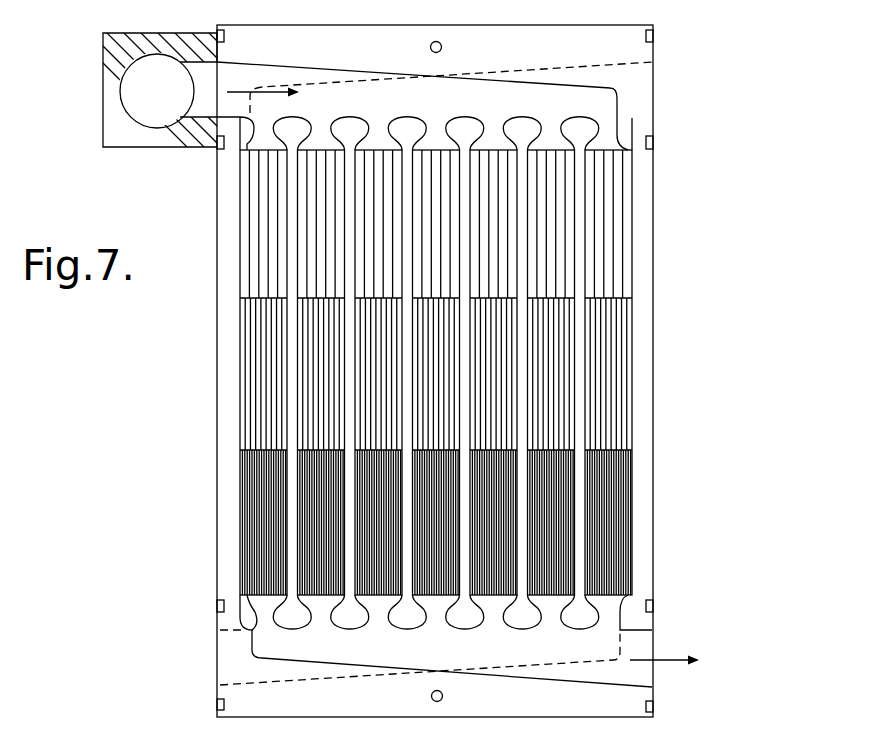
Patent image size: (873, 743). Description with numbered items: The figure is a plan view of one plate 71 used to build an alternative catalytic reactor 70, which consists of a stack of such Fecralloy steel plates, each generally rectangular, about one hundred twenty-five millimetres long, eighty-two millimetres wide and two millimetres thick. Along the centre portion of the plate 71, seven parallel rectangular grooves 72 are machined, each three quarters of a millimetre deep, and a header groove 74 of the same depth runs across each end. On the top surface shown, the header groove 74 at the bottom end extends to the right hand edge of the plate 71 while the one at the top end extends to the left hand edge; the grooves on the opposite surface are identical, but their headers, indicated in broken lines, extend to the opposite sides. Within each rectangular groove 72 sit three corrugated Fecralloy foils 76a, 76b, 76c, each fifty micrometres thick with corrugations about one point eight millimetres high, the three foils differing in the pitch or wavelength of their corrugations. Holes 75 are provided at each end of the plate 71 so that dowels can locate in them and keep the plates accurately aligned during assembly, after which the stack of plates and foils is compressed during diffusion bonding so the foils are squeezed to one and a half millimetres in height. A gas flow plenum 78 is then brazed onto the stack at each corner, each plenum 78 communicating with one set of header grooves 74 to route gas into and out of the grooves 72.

The reactor 70 is at (762, 127).
The Fecralloy steel plate 71 is at (623, 52).
The rectangular groove 72 is at (493, 325).
The header groove 74 is at (332, 98).
The hole 75 is at (442, 47).
The corrugated Fecralloy foil 76a is at (245, 200).
The corrugated Fecralloy foil 76b is at (252, 326).
The corrugated Fecralloy foil 76c is at (240, 500).
The gas flow plenum 78 is at (110, 135).